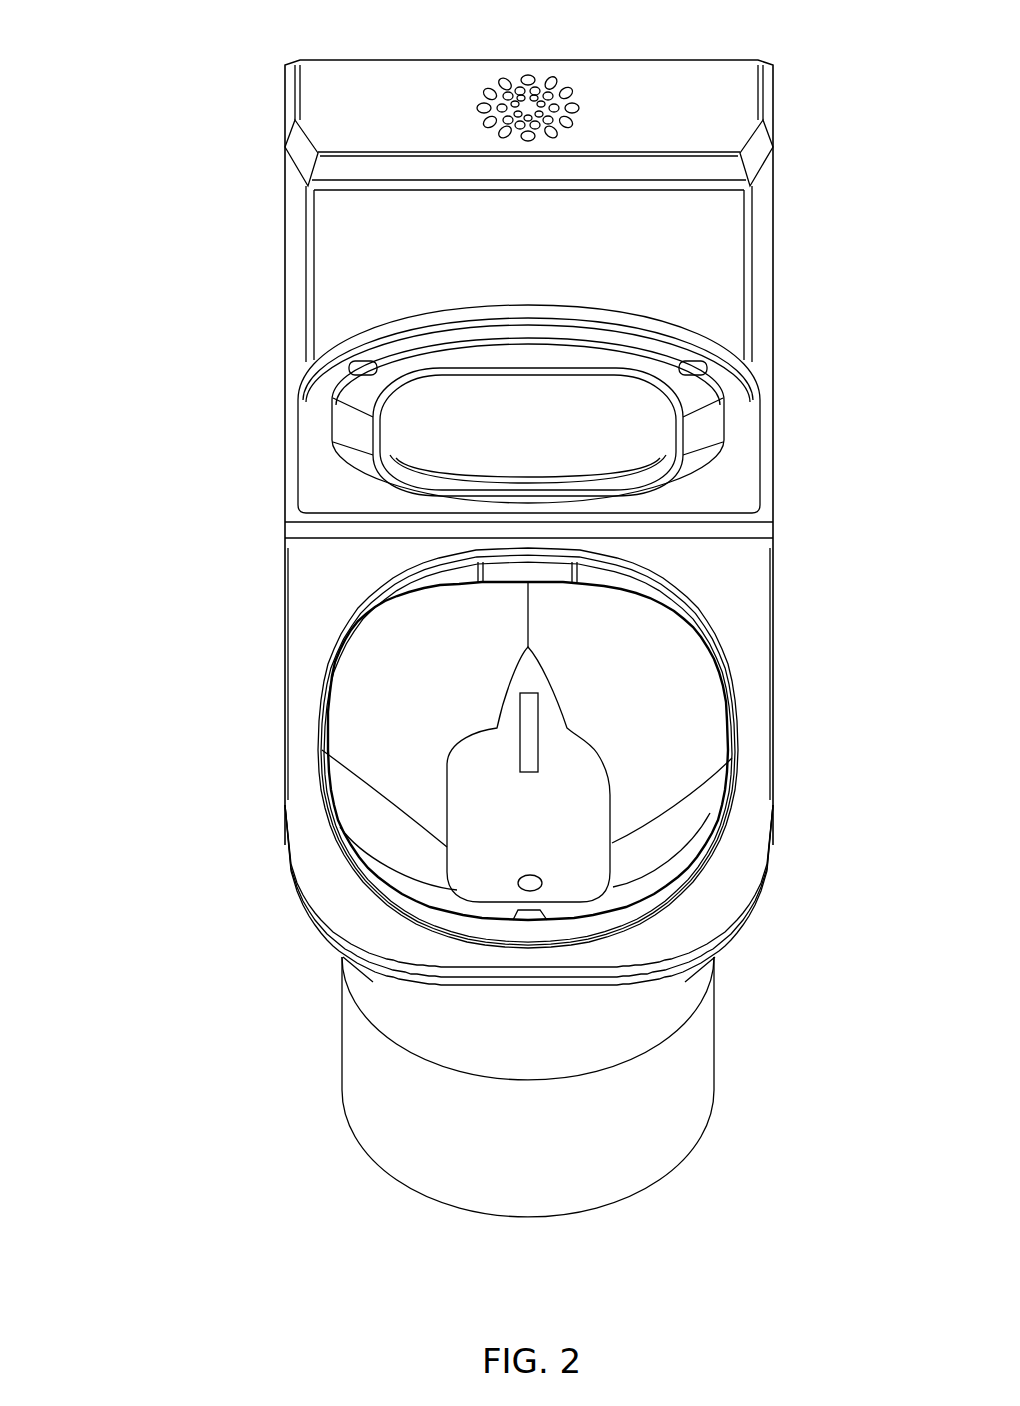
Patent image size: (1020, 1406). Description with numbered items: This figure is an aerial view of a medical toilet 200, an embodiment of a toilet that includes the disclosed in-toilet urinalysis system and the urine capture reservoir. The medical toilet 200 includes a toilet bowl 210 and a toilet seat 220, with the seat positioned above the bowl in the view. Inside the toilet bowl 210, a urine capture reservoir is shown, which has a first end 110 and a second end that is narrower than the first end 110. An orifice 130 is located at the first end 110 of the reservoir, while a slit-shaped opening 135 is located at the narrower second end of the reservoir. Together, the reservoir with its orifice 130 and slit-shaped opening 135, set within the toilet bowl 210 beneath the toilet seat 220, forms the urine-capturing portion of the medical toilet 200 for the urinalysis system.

The medical toilet 200 is at (150, 61).
The toilet seat 220 is at (753, 762).
The toilet bowl 210 is at (707, 702).
The first end 110 is at (540, 848).
The slit-shaped opening 135 is at (520, 745).
The orifice 130 is at (525, 890).